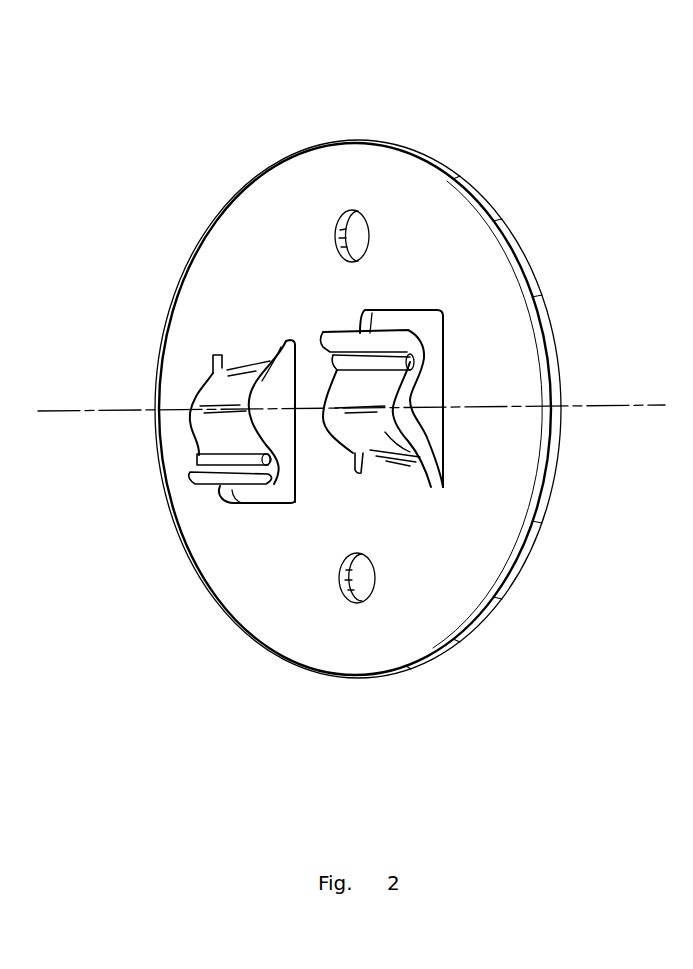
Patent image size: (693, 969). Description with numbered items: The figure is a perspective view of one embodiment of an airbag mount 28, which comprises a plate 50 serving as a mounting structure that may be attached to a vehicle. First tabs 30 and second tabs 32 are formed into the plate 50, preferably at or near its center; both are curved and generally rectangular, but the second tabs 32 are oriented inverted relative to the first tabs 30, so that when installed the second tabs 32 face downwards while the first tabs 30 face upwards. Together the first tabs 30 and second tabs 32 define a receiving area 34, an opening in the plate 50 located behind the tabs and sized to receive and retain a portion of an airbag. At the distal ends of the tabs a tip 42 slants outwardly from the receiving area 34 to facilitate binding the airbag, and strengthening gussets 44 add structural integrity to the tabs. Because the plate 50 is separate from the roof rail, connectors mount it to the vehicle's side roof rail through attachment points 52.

The airbag mount 28 is at (150, 380).
The first tabs 30 is at (443, 453).
The second tabs 32 is at (229, 383).
The receiving area 34 is at (423, 320).
The tip 42 is at (383, 310).
The strengthening gussets 44 is at (407, 350).
The plate 50 is at (238, 228).
The attachment points 52 is at (356, 228).